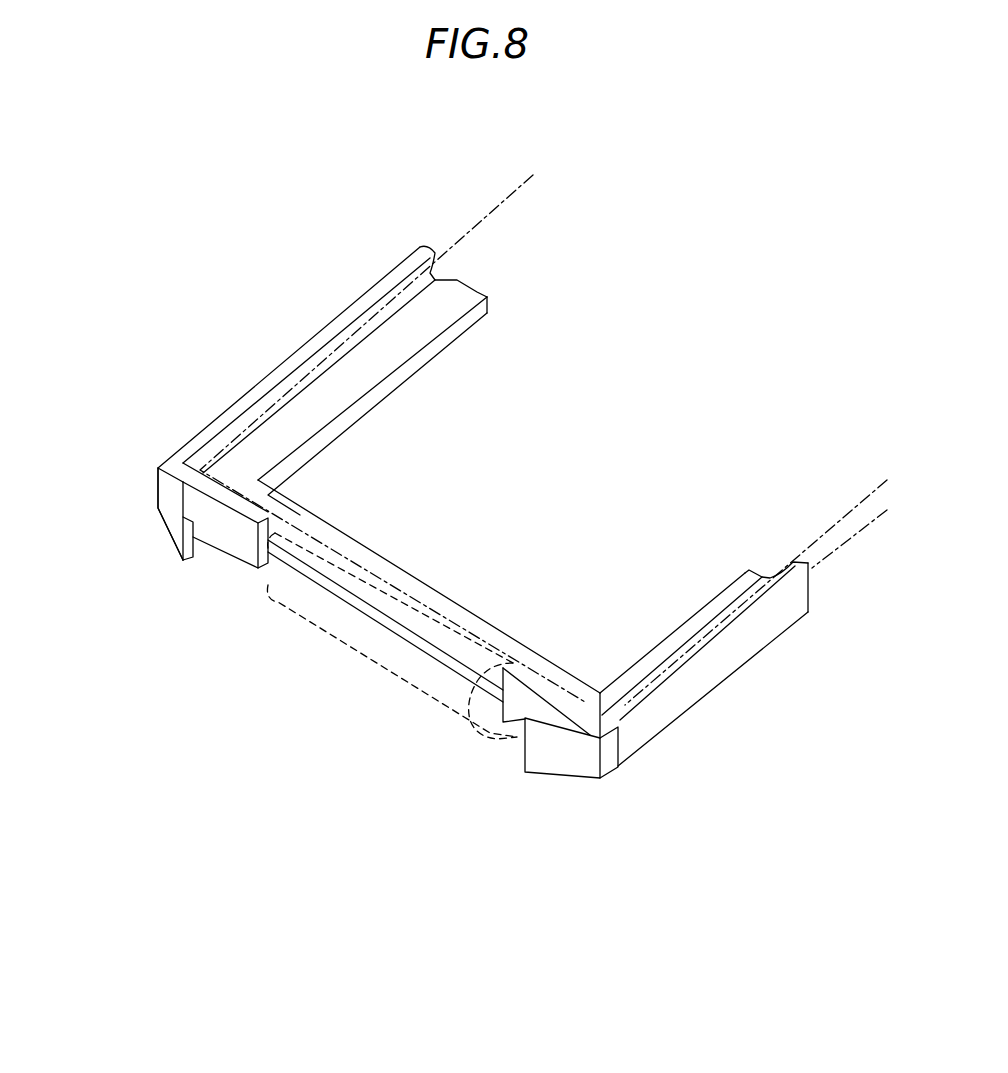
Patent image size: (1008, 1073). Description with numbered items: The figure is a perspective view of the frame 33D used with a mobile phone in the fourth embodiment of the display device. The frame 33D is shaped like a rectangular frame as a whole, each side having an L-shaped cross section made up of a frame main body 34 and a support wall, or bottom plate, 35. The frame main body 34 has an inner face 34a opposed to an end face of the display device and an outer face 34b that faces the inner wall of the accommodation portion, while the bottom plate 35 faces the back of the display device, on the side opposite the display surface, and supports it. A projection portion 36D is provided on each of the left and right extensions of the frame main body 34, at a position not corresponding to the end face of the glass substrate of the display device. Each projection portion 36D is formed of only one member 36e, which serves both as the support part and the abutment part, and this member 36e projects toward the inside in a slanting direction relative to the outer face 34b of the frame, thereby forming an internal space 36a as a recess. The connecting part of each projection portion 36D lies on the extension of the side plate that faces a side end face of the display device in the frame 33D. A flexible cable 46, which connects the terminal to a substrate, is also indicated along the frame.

The frame 33D is at (332, 318).
The frame main body 34 is at (387, 272).
The inner face 34a is at (417, 270).
The outer face 34b is at (243, 550).
The support wall (bottom plate) 35 is at (373, 373).
The projection portion 36D is at (167, 547).
The internal space (recess) 36a is at (203, 528).
The member 36e is at (177, 520).
The flexible cable 46 is at (360, 647).